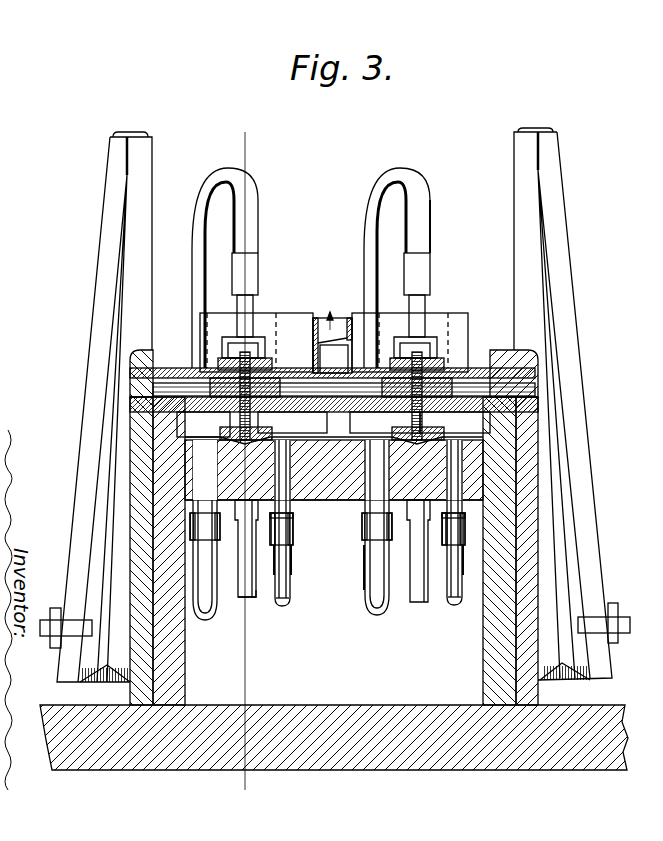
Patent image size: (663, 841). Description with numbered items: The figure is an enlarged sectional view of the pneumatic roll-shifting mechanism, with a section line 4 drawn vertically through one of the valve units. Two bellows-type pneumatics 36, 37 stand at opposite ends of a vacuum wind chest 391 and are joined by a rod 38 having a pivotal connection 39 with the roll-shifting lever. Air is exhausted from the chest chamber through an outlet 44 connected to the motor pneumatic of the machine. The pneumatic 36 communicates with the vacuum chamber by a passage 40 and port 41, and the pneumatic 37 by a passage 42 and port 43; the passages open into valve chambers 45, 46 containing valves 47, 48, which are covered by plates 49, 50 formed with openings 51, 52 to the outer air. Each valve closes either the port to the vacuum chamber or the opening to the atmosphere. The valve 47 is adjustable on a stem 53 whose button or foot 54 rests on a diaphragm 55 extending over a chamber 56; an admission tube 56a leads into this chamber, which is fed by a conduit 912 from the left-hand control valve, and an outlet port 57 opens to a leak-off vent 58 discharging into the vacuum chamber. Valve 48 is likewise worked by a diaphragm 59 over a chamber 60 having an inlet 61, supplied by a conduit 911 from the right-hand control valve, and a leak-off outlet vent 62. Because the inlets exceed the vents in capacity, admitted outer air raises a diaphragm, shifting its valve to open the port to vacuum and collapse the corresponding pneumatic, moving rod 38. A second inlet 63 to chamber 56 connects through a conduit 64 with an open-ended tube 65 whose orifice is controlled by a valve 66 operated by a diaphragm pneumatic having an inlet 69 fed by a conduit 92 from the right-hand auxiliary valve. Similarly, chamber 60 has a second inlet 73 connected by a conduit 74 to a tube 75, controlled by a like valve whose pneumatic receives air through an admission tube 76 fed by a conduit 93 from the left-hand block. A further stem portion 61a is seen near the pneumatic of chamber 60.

The section line 4- 4 is at (223, 132).
The pneumatic 36 is at (95, 390).
The pneumatic 37 is at (590, 440).
The rod 38 is at (55, 608).
The pivotal connection 39 is at (618, 610).
The vacuum wind chest 391 is at (583, 395).
The passage 40 is at (165, 368).
The port 41 is at (238, 416).
The passage 42 is at (485, 383).
The port 43 is at (412, 412).
The outlet 44 is at (310, 330).
The chamber 45 is at (200, 320).
The chamber 46 is at (468, 320).
The valve 47 is at (278, 358).
The valve 48 is at (448, 362).
The plate 49 is at (310, 365).
The plate 50 is at (404, 310).
The opening 51 is at (213, 330).
The opening 52 is at (442, 330).
The stem 53 is at (262, 437).
The button or foot 54 is at (330, 438).
The diaphragm 55 is at (130, 462).
The chamber 56 is at (208, 604).
The admission tube 56a is at (290, 575).
The outlet port 57 is at (294, 516).
The leak-off vent 58 is at (330, 445).
The diaphragm 59 is at (430, 437).
The chamber 60 is at (418, 548).
The inlet 61 is at (465, 570).
The tube wall 61a is at (278, 568).
The leak-off outlet vent 62 is at (296, 550).
The second inlet 63 is at (220, 520).
The conduit 64 is at (238, 186).
The tube 65 is at (250, 310).
The valve 66 is at (250, 348).
The inlet 69 is at (246, 548).
The second inlet 73 is at (364, 565).
The conduit 74 is at (412, 186).
The tube 75 is at (430, 300).
The admission tube 76 is at (448, 540).
The conduit 92 is at (250, 600).
The conduit 93 is at (452, 598).
The tube or conduit 911 is at (456, 605).
The conduit 912 is at (285, 605).